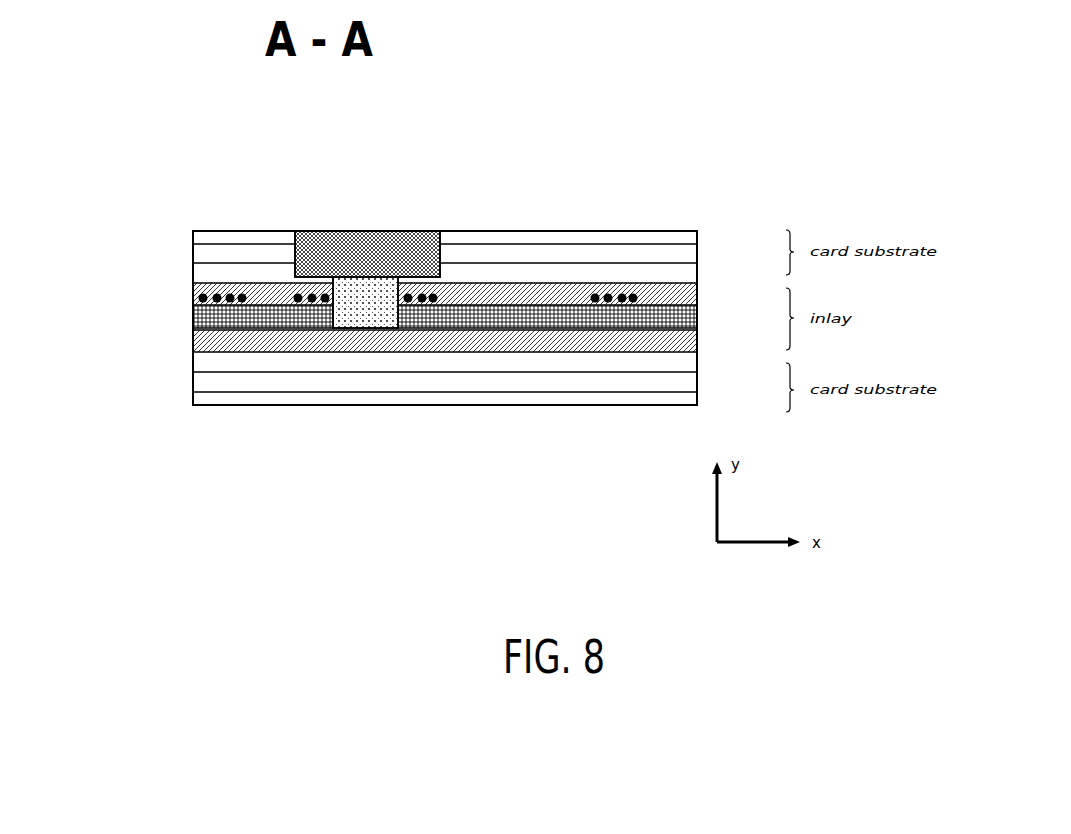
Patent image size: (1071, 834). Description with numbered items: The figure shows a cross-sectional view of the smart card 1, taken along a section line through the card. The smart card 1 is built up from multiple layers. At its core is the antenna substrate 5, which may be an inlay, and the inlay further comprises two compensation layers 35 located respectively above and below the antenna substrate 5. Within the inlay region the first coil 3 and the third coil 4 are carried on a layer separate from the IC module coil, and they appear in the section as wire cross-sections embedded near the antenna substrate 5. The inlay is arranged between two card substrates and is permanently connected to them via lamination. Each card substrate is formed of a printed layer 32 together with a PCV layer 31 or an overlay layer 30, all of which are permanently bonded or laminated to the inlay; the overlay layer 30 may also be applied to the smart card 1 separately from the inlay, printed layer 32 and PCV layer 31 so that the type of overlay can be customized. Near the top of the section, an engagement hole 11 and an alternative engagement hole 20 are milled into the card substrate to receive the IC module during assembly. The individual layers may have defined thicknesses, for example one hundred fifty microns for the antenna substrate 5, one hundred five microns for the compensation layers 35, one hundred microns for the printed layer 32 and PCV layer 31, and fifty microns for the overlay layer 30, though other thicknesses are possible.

The smart card 1 is at (118, 159).
The first coil 3 is at (312, 232).
The third coil 4 is at (215, 285).
The antenna substrate 5 is at (192, 325).
The engagement hole 11 is at (378, 205).
The alternative engagement hole 20 is at (378, 242).
The overlay layer 30 is at (542, 237).
The PCV layer 31 is at (587, 253).
The printed layer 32 is at (618, 268).
The compensation layer 35 is at (192, 290).